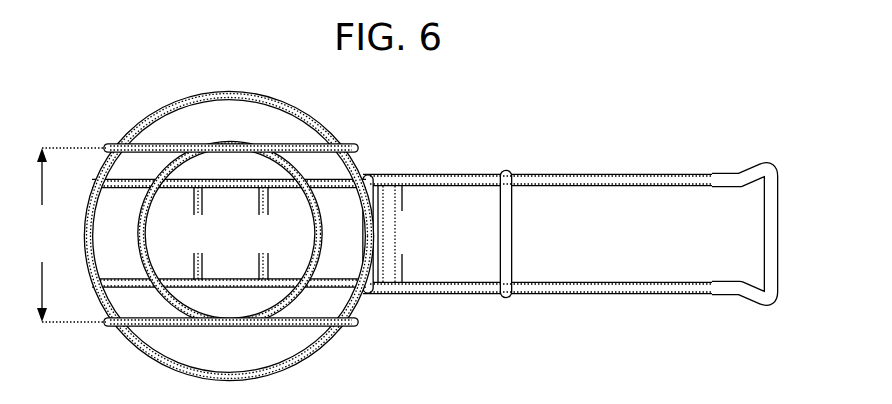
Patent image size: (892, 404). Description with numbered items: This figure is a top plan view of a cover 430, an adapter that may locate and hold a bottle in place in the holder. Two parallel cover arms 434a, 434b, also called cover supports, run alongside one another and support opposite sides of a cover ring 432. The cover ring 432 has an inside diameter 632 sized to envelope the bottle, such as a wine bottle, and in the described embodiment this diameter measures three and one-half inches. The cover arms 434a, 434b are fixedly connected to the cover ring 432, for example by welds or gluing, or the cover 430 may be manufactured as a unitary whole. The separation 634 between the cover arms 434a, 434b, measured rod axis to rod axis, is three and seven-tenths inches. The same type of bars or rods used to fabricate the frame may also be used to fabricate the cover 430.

The cover 430 is at (160, 135).
The cover ring 432 is at (319, 234).
The cover arm 434a is at (355, 326).
The cover arm 434b is at (350, 143).
The inside diameter of the cover ring 632 is at (174, 281).
The separation between the cover supports 634 is at (65, 235).